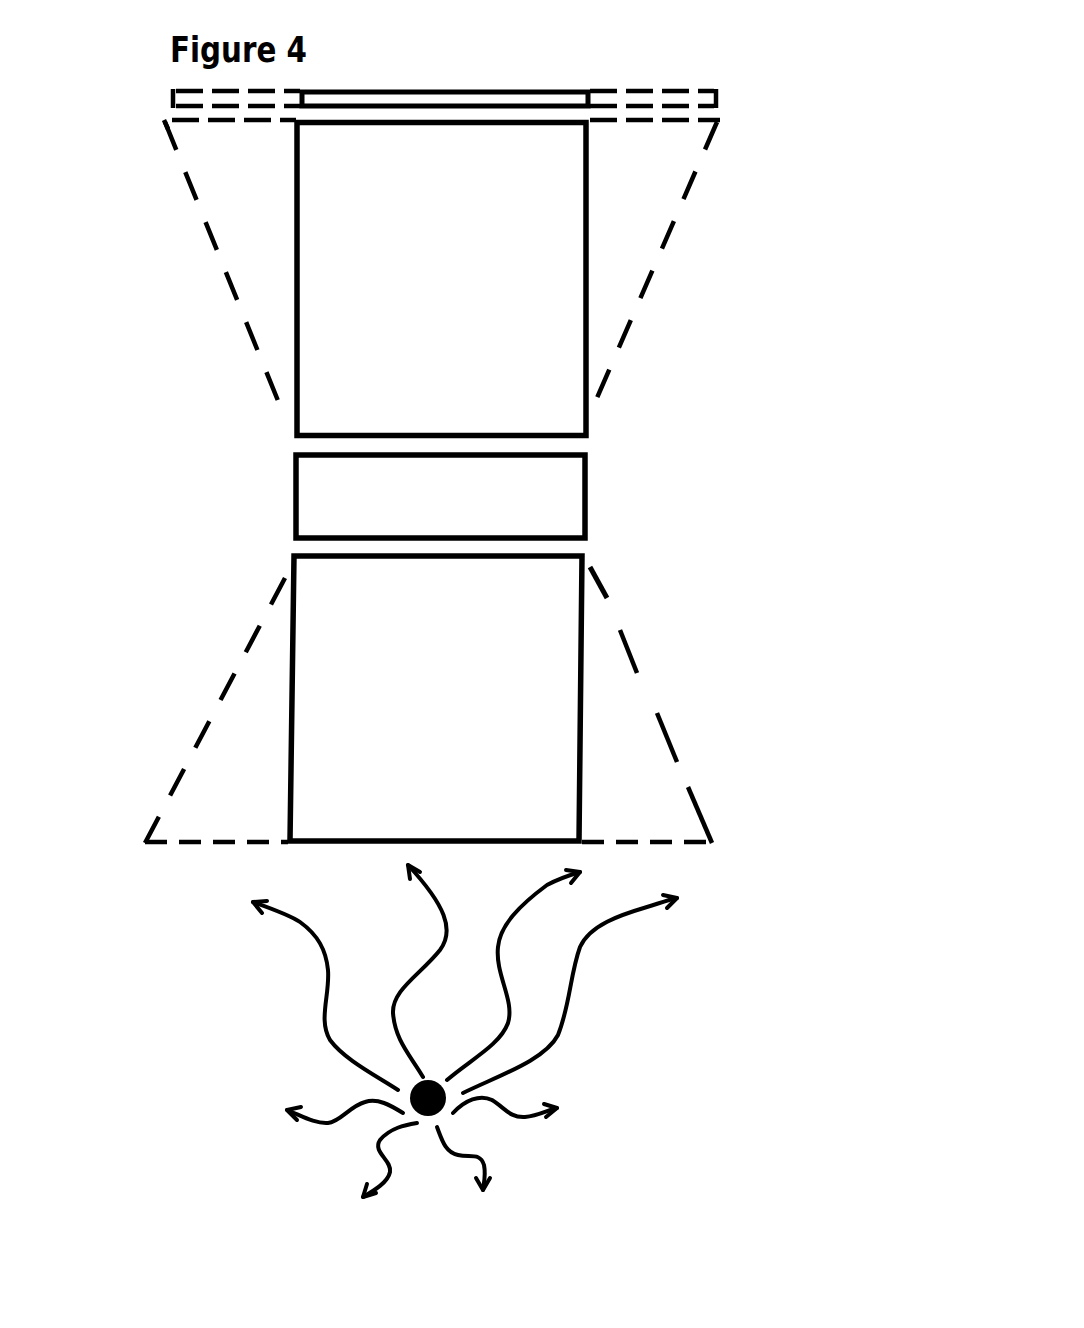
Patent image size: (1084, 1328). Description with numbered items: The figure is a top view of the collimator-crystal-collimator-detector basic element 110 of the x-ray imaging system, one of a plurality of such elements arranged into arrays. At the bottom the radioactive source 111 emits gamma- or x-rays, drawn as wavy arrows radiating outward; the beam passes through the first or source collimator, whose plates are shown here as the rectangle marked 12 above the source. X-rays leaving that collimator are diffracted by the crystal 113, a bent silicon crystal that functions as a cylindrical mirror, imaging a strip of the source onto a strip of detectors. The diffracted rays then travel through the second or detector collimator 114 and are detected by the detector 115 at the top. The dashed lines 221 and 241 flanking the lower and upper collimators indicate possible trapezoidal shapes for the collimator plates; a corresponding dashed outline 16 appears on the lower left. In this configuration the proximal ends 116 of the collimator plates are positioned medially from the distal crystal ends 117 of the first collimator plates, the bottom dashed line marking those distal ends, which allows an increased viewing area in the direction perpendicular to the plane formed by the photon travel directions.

The detector 115 is at (565, 90).
The dashed line 241 is at (703, 172).
The second collimator 114 is at (590, 253).
The basic element 110 is at (693, 330).
The crystal 113 is at (590, 498).
The lower left side wall 16 is at (283, 572).
The proximal ends 116 is at (597, 567).
The lower housing section 12 is at (588, 625).
The dashed line 221 is at (668, 735).
The distal crystal ends 117 is at (132, 845).
The radioactive source 111 is at (450, 1113).